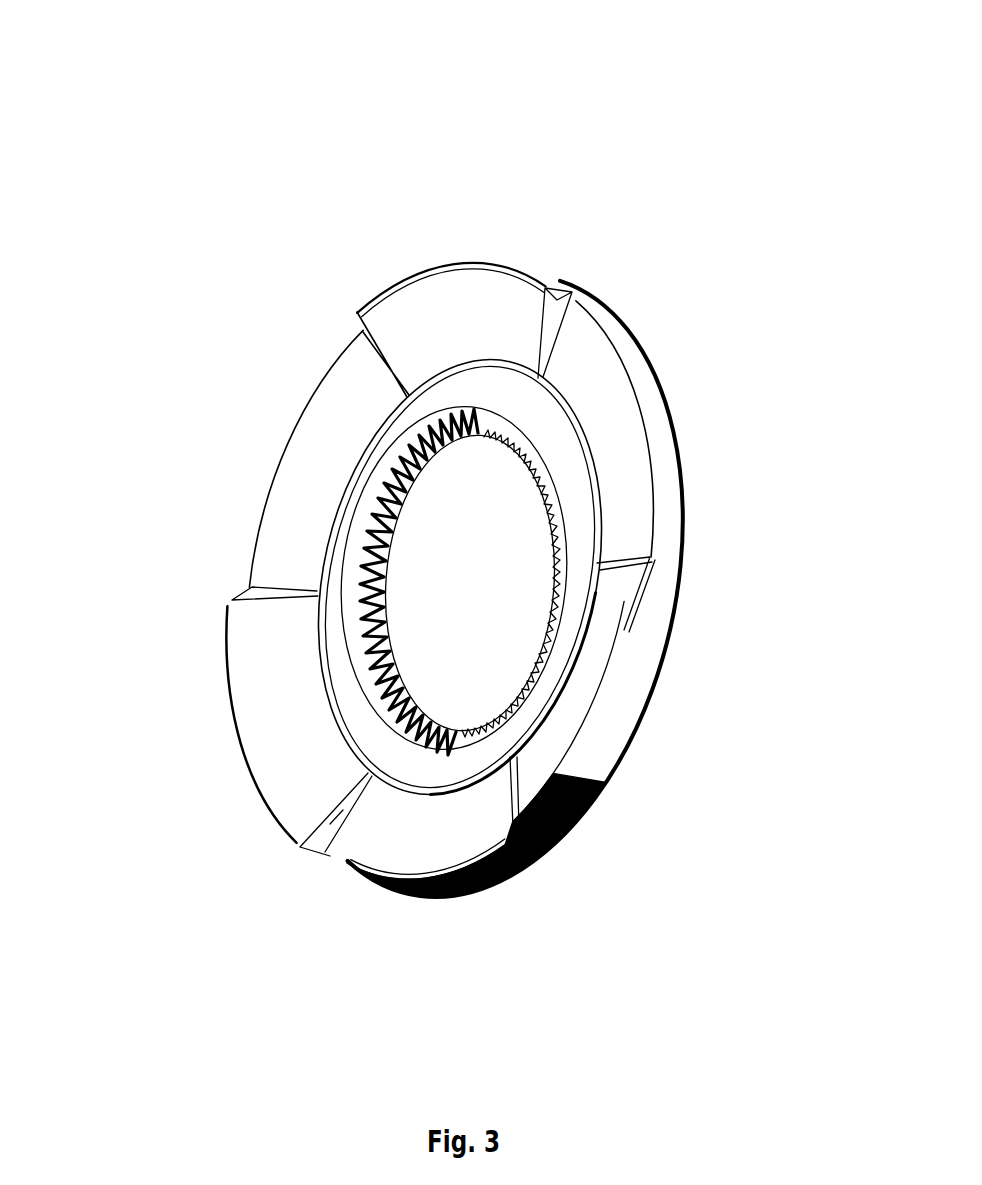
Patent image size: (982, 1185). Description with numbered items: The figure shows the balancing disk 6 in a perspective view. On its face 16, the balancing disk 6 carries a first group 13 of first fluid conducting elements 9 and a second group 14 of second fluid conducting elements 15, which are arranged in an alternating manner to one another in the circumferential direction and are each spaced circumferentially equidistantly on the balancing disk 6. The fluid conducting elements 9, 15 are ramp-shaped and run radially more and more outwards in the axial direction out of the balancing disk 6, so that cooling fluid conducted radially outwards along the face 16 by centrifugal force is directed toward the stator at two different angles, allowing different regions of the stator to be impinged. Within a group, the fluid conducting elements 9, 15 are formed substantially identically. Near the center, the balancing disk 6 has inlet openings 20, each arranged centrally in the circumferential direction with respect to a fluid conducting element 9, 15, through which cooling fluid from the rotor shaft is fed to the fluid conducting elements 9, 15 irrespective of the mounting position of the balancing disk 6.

The balancing disk 6 is at (433, 150).
The face 16 is at (237, 515).
The first fluid conducting element 9 is at (514, 539).
The first group of fluid conducting elements 13 is at (473, 294).
The second fluid conducting element 15 is at (483, 644).
The second group of fluid conducting elements 14 is at (312, 445).
The inlet openings 20 is at (469, 413).